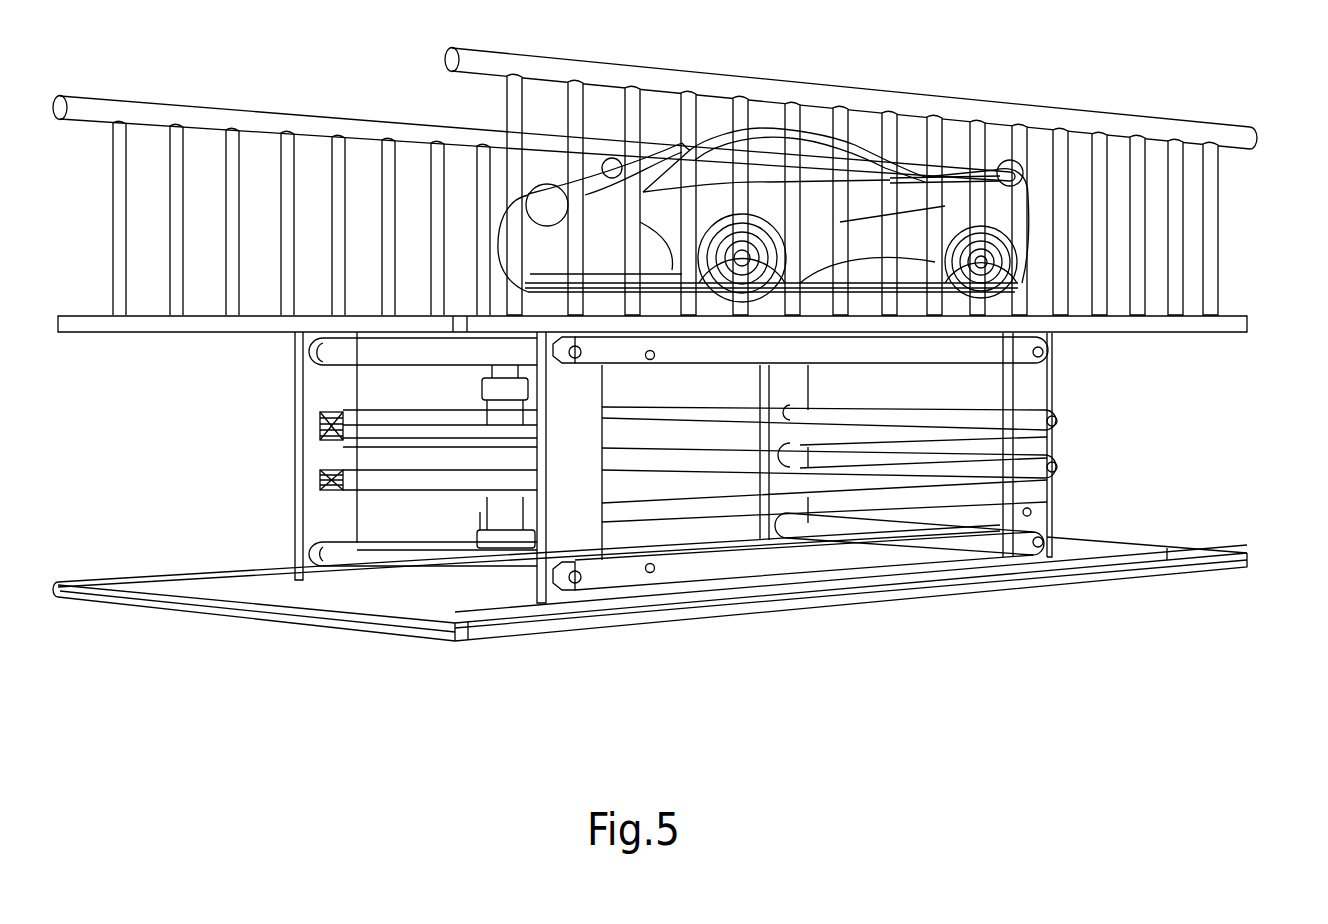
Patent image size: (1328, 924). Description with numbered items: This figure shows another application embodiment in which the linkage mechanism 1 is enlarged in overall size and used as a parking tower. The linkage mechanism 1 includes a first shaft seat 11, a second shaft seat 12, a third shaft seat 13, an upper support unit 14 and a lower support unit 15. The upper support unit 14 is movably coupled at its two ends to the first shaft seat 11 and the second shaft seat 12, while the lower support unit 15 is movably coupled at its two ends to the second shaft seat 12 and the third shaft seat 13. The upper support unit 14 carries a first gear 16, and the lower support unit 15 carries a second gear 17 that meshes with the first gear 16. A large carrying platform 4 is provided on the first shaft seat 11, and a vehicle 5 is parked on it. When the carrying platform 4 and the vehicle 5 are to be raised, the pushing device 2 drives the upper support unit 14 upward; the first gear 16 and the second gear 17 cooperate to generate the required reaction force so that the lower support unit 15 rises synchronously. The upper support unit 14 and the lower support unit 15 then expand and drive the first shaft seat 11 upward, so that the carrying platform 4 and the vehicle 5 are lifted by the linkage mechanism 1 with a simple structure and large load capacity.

The linkage mechanism 1 is at (1087, 480).
The pushing device 2 is at (455, 393).
The carrying platform 4 is at (1223, 213).
The vehicle 5 is at (767, 127).
The first shaft seat 11 is at (1052, 383).
The second shaft seat 12 is at (312, 525).
The third shaft seat 13 is at (1053, 517).
The upper support unit 14 is at (657, 367).
The lower support unit 15 is at (826, 578).
The first gear 16 is at (320, 418).
The second gear 17 is at (320, 482).